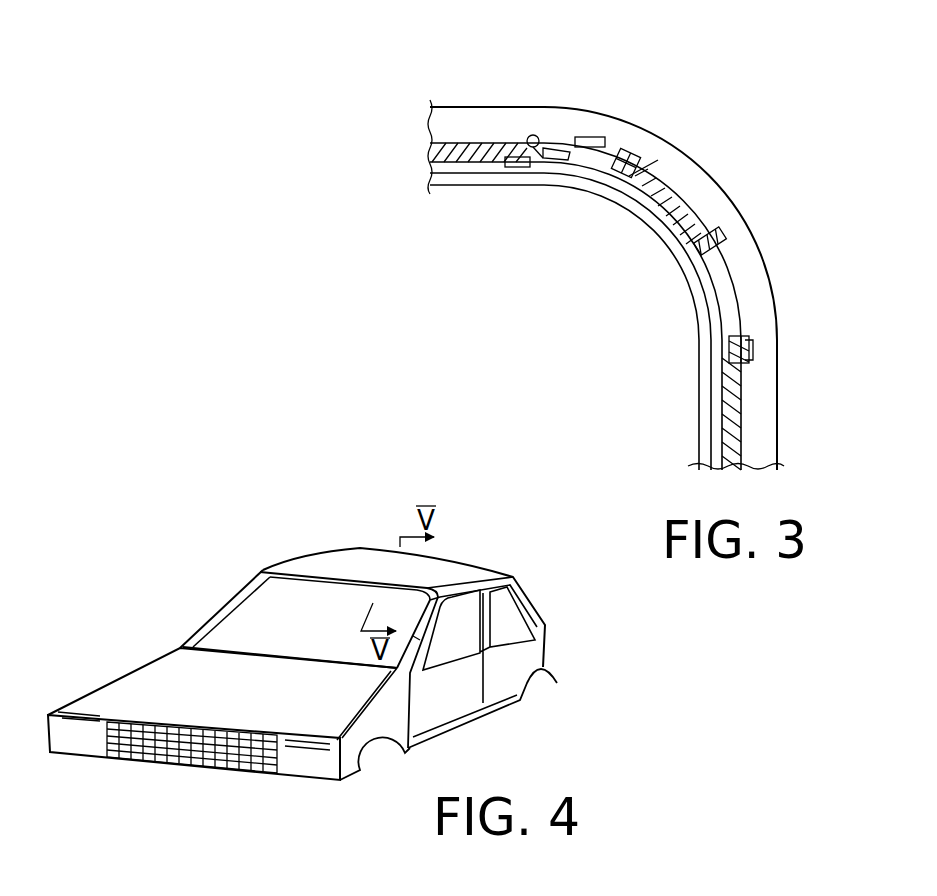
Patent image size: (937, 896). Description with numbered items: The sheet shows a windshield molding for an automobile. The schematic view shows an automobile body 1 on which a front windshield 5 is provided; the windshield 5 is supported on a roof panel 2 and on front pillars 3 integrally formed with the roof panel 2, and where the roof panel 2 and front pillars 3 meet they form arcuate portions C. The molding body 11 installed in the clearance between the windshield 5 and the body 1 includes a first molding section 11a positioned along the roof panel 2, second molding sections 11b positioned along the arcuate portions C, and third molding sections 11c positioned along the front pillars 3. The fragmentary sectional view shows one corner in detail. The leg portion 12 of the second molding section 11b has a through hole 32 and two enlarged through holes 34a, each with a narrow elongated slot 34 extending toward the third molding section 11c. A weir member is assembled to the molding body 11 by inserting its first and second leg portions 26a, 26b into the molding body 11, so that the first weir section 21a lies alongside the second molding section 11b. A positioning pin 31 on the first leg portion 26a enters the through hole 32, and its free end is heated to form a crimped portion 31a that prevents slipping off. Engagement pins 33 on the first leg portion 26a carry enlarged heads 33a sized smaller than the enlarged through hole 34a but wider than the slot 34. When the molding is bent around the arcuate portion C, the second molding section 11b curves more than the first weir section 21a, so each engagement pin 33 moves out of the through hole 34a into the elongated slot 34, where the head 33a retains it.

In FIG. 4, the automobile body 1 is at (353, 562).
In FIG. 4, the roof panel 2 is at (377, 563).
In FIG. 4, the front pillar 3 is at (445, 607).
In FIG. 4, the front windshield 5 is at (252, 603).
In FIG. 4, the molding body 11 is at (317, 566).
In FIG. 3, the first molding section 11a is at (555, 102).
In FIG. 4, the first molding section 11a is at (337, 585).
In FIG. 3, the second molding section 11b is at (720, 173).
In FIG. 4, the second molding section 11b is at (262, 570).
In FIG. 3, the third molding section 11c is at (782, 412).
In FIG. 4, the third molding section 11c is at (213, 618).
In FIG. 3, the leg portion 12 is at (692, 216).
In FIG. 3, the first weir section 21a is at (642, 217).
In FIG. 3, the first leg portion 26a is at (675, 250).
In FIG. 3, the second leg portion 26b is at (182, 9).
In FIG. 3, the positioning pin 31 is at (528, 146).
In FIG. 3, the crimped portion 31a is at (548, 136).
In FIG. 3, the through hole 32 is at (578, 128).
In FIG. 3, the engagement pin 33 is at (641, 124).
In FIG. 3, the enlarged head 33a is at (633, 172).
In FIG. 3, the elongated slot 34 is at (598, 196).
In FIG. 3, the enlarged through hole 34a is at (573, 190).
In FIG. 4, the arcuate portion C is at (443, 602).